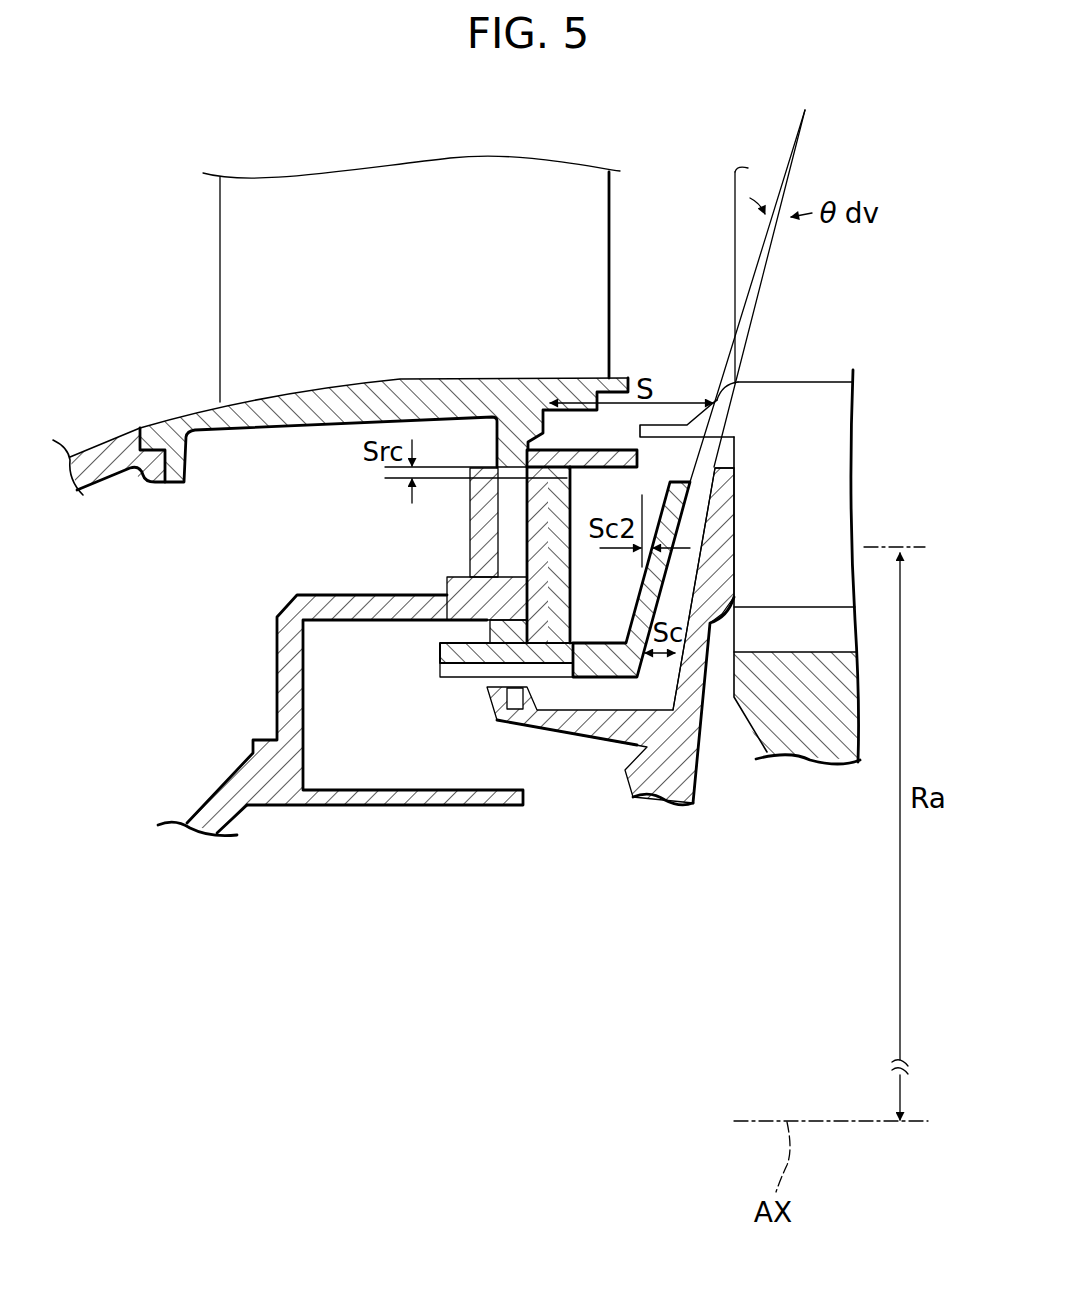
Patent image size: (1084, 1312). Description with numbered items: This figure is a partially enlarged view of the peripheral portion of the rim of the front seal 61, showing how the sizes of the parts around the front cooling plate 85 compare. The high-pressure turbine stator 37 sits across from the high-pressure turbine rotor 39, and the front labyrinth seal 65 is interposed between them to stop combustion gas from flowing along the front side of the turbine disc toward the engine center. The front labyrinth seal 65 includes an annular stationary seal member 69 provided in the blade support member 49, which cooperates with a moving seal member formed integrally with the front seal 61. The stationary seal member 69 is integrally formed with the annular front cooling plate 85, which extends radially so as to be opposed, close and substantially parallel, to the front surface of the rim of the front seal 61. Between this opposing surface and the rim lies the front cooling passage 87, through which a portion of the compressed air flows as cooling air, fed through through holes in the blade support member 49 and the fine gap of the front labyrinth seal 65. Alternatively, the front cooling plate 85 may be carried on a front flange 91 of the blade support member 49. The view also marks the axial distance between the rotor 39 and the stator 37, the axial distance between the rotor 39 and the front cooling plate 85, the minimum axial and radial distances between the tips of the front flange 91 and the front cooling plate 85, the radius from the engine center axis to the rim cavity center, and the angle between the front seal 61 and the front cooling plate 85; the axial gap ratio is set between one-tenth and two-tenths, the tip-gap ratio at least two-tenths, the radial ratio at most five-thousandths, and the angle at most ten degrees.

The high-pressure turbine stator 37 is at (621, 222).
The high-pressure turbine rotor 39 is at (722, 220).
The blade support member 49 is at (277, 627).
The front seal 61 is at (653, 750).
The front labyrinth seal 65 is at (442, 700).
The stationary seal member 69 is at (465, 650).
The front cooling plate 85 is at (660, 505).
The front cooling passage 87 is at (672, 617).
The front flange 91 is at (587, 455).